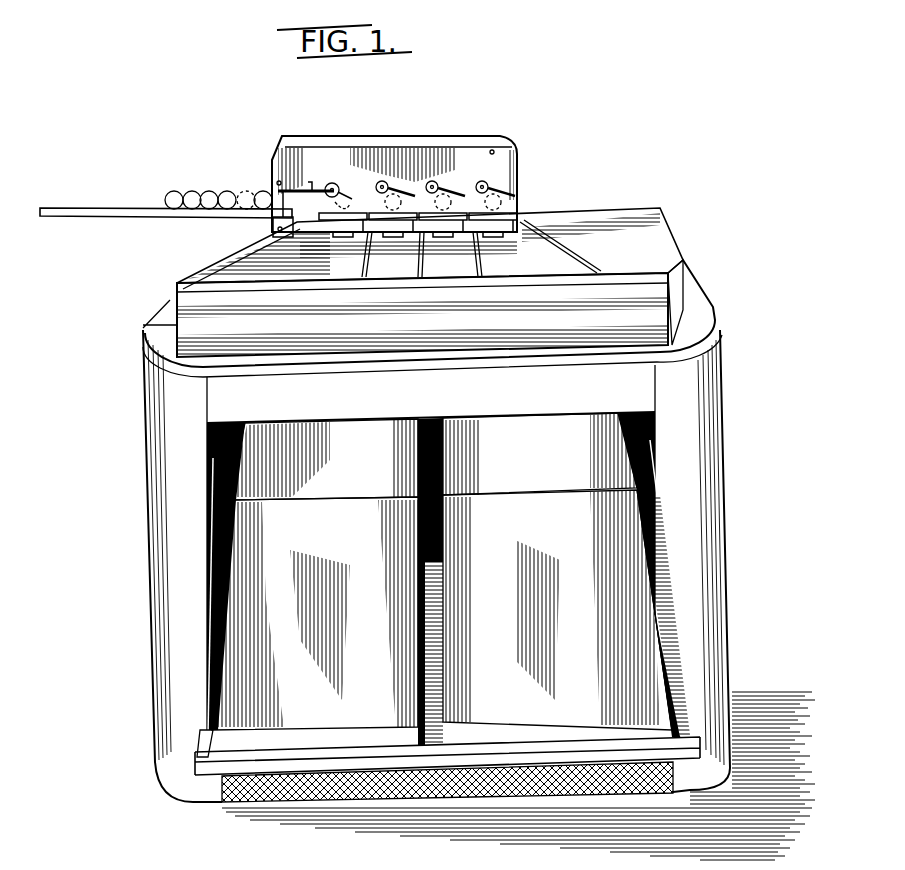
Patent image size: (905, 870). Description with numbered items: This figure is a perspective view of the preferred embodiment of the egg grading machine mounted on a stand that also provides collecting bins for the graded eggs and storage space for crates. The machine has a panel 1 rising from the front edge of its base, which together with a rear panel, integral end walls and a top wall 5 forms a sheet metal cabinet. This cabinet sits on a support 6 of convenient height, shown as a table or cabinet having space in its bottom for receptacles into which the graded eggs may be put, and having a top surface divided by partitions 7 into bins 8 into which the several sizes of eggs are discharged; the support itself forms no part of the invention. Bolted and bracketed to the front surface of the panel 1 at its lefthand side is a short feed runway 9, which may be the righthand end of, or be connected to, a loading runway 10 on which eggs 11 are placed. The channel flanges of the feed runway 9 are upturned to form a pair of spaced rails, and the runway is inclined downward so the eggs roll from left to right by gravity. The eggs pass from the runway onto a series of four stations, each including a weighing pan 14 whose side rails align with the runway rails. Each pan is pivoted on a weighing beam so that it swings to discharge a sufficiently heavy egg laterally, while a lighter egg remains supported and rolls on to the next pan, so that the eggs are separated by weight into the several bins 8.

The panel 1 is at (420, 160).
The top wall 5 is at (488, 134).
The support 6 is at (152, 515).
The partitions 7 is at (420, 258).
The bins 8 is at (317, 266).
The feed runway 9 is at (273, 215).
The loading runway 10 is at (150, 215).
The eggs 11 is at (212, 197).
The weighing pan 14 is at (450, 207).